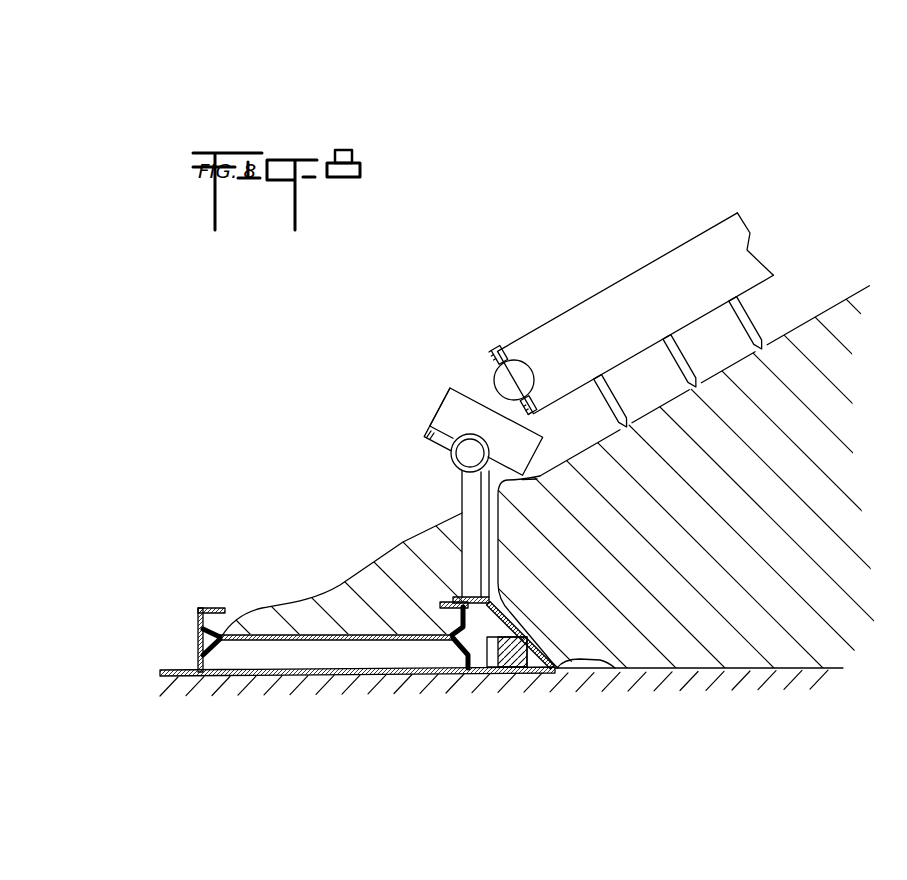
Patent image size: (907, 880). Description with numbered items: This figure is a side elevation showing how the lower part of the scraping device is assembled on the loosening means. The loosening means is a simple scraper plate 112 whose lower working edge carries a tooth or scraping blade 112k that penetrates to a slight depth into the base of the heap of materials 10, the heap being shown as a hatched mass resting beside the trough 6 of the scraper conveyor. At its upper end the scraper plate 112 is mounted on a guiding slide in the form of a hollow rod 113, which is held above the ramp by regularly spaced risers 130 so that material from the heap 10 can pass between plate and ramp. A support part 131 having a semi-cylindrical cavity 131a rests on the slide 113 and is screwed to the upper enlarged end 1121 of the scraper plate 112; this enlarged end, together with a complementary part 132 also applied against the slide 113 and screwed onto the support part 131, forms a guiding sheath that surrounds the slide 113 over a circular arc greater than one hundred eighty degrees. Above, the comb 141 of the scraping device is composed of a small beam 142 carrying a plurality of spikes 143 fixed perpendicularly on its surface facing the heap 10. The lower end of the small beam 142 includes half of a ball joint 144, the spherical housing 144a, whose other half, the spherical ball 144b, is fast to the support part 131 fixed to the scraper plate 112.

The trough 6 is at (326, 648).
The heap of materials 10 is at (728, 506).
The scraper plate 112 is at (496, 568).
The upper enlarged end of the scraper plate 1121 is at (516, 489).
The tooth or scraping blade 112k is at (580, 663).
The hollow rod 113 is at (452, 465).
The risers 130 is at (467, 503).
The support part 131 is at (460, 405).
The semi-cylindrical cavity 131a is at (450, 424).
The complementary part 132 is at (428, 432).
The comb 141 is at (677, 229).
The small beam 142 is at (750, 251).
The spikes 143 is at (752, 324).
The ball joint 144 is at (495, 374).
The spherical housing 144a is at (516, 372).
The spherical ball 144b is at (490, 373).